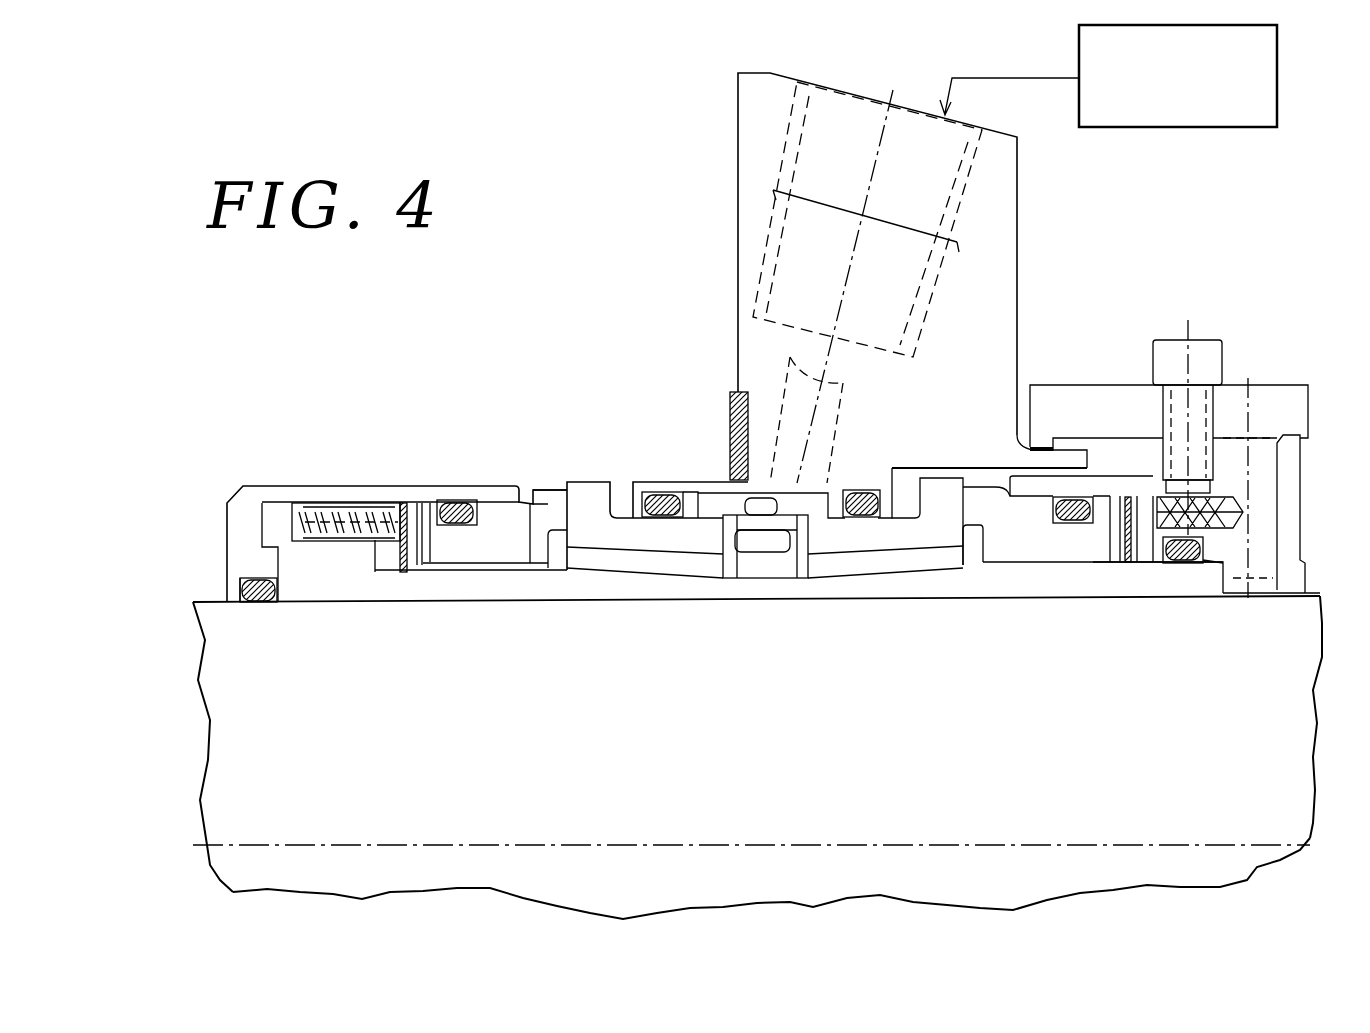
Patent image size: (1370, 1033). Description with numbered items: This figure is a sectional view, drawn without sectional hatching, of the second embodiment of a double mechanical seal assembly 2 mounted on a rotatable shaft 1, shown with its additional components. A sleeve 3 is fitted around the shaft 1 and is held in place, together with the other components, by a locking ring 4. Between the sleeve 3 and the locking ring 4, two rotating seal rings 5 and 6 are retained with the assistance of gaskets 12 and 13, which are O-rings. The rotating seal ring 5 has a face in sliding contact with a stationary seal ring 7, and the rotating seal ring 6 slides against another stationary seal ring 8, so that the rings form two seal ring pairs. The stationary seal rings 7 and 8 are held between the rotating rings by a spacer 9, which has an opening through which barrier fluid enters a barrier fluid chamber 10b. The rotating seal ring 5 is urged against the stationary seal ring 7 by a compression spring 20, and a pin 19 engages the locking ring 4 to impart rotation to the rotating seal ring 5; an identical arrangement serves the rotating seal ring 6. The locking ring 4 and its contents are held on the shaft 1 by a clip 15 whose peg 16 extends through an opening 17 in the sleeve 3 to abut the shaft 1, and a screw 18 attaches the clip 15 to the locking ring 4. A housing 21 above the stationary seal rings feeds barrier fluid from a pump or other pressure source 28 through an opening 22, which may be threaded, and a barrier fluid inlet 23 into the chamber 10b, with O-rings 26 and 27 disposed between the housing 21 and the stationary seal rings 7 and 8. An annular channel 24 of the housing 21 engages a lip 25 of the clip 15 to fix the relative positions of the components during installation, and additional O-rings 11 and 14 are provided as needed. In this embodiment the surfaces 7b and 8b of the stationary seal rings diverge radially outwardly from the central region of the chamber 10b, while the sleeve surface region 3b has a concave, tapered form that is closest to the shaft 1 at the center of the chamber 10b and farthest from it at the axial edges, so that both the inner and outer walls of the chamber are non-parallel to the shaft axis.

The rotatable shaft 1 is at (232, 673).
The seal assembly 2 is at (491, 452).
The sleeve 3 is at (340, 580).
The sleeve surface region 3b is at (605, 577).
The locking ring 4 is at (243, 490).
The rotating seal ring 5 is at (560, 490).
The rotating seal ring 6 is at (1020, 548).
The stationary seal ring 7 is at (598, 490).
The surface of stationary seal ring 7b is at (637, 557).
The stationary seal ring 8 is at (942, 495).
The surface of stationary seal ring 8b is at (865, 558).
The spacer 9 is at (790, 520).
The barrier fluid chamber 10b is at (666, 575).
The O-ring 11 is at (258, 603).
The gasket 12 is at (455, 500).
The gasket 13 is at (1068, 522).
The O-ring 14 is at (1180, 560).
The clip 15 is at (1105, 395).
The peg 16 is at (1262, 592).
The opening 17 is at (1220, 565).
The screw 18 is at (1218, 352).
The pin 19 is at (360, 503).
The spring 20 is at (330, 508).
The housing 21 is at (750, 140).
The opening 22 is at (920, 310).
The barrier fluid inlet 23 is at (845, 405).
The annular channel 24 is at (1033, 457).
The lip 25 is at (1028, 445).
The O-ring 26 is at (665, 495).
The O-ring 27 is at (862, 493).
The pressure source 28 is at (1190, 127).